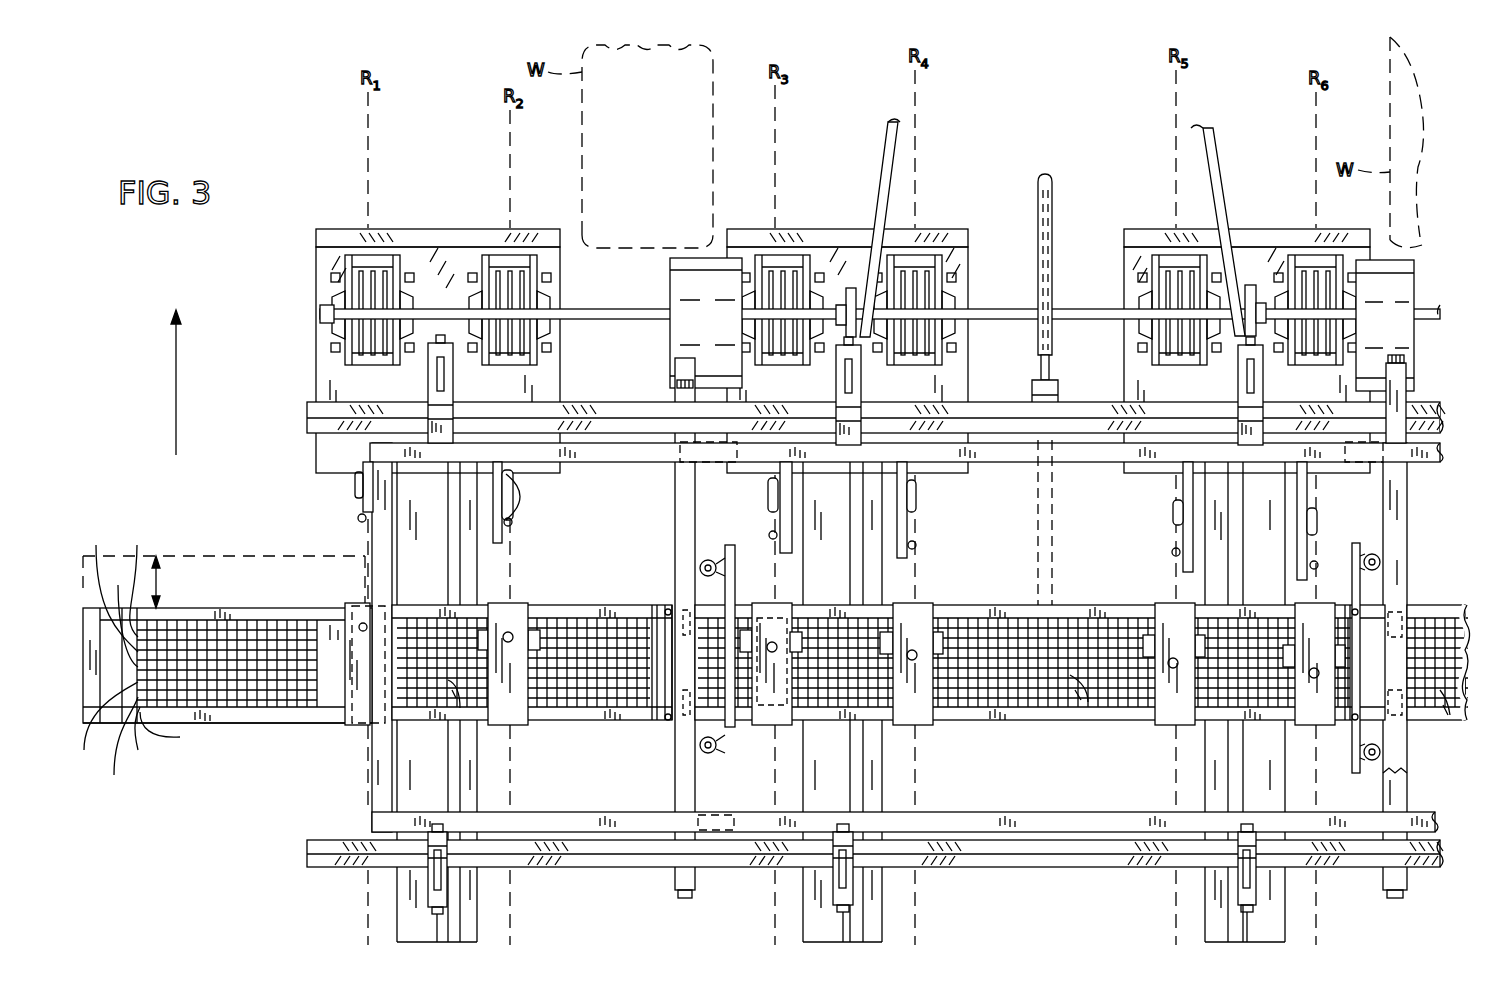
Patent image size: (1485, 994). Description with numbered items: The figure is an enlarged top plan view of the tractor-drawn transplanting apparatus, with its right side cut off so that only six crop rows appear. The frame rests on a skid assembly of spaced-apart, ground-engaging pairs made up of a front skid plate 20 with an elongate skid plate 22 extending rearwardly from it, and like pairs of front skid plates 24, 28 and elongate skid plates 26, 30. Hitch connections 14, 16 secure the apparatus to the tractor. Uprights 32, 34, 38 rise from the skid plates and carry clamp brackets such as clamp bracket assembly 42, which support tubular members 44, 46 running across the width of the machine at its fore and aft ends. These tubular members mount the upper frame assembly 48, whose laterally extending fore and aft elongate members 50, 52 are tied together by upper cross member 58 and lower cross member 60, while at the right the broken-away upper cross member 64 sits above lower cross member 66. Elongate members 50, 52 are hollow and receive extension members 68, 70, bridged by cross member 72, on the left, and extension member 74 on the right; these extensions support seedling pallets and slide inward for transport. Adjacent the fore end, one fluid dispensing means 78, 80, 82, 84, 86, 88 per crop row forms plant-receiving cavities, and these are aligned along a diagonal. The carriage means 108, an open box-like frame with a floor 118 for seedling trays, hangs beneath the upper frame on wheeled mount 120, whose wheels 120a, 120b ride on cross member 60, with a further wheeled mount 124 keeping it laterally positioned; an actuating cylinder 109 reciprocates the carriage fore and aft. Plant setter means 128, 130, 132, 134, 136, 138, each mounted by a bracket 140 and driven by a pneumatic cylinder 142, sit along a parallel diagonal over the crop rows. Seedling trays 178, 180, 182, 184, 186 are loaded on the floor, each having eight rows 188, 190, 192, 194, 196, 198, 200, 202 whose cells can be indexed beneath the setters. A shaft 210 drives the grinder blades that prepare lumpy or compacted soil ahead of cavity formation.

The three-point hitch connection 14 is at (1048, 398).
The three-point hitch connection 16 is at (847, 290).
The front skid plate 20 is at (316, 272).
The elongate skid plate 22 is at (397, 912).
The front skid plate 24 is at (954, 257).
The elongate skid plate 26 is at (882, 905).
The front skid plate 28 is at (1252, 258).
The elongate skid plate 30 is at (1205, 913).
The upright 32 is at (428, 368).
The upright 34 is at (440, 888).
The upright 38 is at (833, 890).
The clamp bracket assembly 42 is at (428, 871).
The tubular member 44 is at (609, 402).
The tubular member 46 is at (596, 868).
The upper frame assembly 48 is at (973, 825).
The fore elongate member 50 is at (1000, 464).
The aft elongate member 52 is at (1073, 812).
The upper cross member 58 is at (675, 509).
The lower cross member 60 is at (675, 550).
The upper cross member 64 is at (1407, 523).
The lower cross member 66 is at (1407, 575).
The extension member 68 is at (603, 460).
The extension member 70 is at (553, 812).
The cross member 72 is at (378, 780).
The extension member 74 is at (1425, 462).
The fluid dispensing means 78 is at (356, 504).
The fluid dispensing means 80 is at (526, 509).
The fluid dispensing means 82 is at (769, 514).
The fluid dispensing means 84 is at (915, 526).
The fluid dispensing means 86 is at (1172, 538).
The fluid dispensing means 88 is at (1314, 543).
The carriage means 108 is at (267, 600).
The actuating cylinder 109 is at (1052, 506).
The floor 118 is at (272, 723).
The wheeled mount 120 is at (683, 720).
The wheel 120a is at (683, 600).
The wheel 120b is at (685, 755).
The wheeled mount 124 is at (748, 557).
The plant setter means 128 is at (347, 603).
The plant setter means 130 is at (524, 600).
The plant setter means 132 is at (792, 598).
The plant setter means 134 is at (929, 600).
The plant setter means 136 is at (1156, 600).
The plant setter means 138 is at (1299, 600).
The bracket 140 is at (354, 726).
The fluid-actuated cylinder 142 is at (366, 622).
The seedling tray 178 is at (238, 720).
The seedling tray 180 is at (578, 722).
The seedling tray 182 is at (958, 722).
The seedling tray 184 is at (1129, 722).
The seedling tray 186 is at (1448, 707).
The tray row 188 is at (160, 590).
The tray row 190 is at (139, 578).
The tray row 192 is at (118, 613).
The tray row 194 is at (108, 585).
The tray row 196 is at (101, 728).
The tray row 198 is at (117, 748).
The tray row 200 is at (139, 741).
The tray row 202 is at (171, 731).
The shaft 210 is at (625, 309).